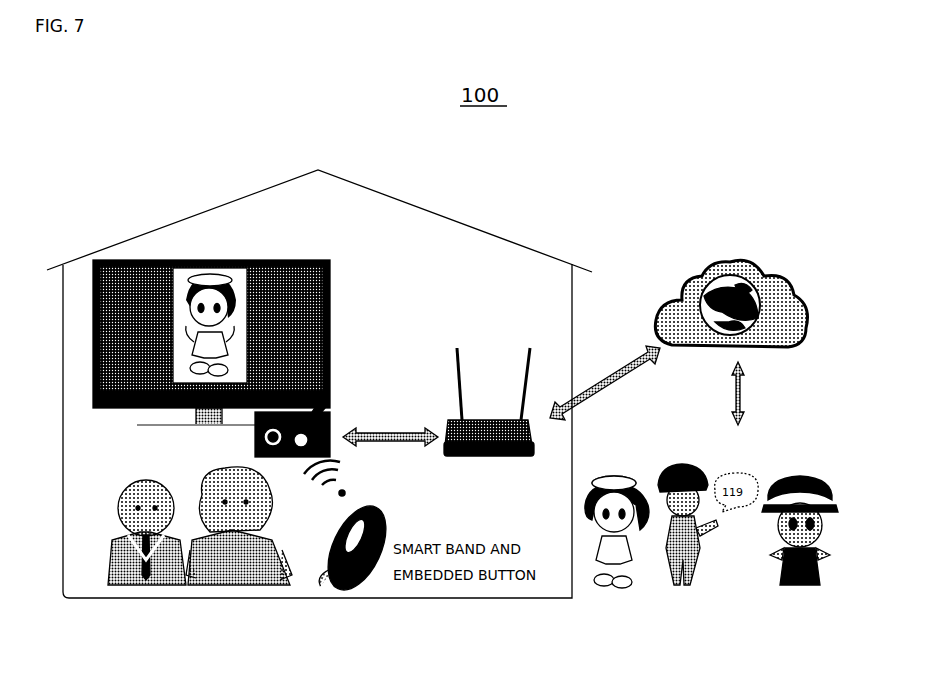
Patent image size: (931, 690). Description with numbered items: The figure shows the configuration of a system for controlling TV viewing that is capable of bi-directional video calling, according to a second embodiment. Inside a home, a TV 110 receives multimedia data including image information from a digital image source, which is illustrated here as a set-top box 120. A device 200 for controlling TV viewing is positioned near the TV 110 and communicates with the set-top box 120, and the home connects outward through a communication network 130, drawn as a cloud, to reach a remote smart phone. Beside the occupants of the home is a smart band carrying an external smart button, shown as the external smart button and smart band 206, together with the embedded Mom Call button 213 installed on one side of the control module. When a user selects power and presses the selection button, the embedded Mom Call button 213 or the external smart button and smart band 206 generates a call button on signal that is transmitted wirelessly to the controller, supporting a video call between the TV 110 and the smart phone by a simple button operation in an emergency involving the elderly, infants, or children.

The TV 110 is at (268, 260).
The set-top box 120 is at (480, 412).
The communication network 130 is at (750, 258).
The device for controlling TV viewing 200 is at (330, 418).
The external smart button and smart band 206 is at (337, 576).
The embedded Mom Call button 213 is at (338, 595).